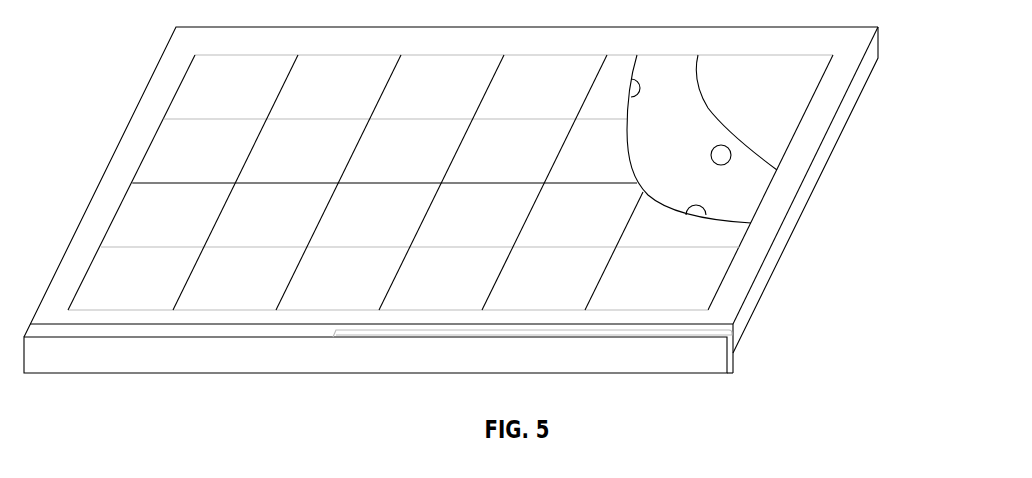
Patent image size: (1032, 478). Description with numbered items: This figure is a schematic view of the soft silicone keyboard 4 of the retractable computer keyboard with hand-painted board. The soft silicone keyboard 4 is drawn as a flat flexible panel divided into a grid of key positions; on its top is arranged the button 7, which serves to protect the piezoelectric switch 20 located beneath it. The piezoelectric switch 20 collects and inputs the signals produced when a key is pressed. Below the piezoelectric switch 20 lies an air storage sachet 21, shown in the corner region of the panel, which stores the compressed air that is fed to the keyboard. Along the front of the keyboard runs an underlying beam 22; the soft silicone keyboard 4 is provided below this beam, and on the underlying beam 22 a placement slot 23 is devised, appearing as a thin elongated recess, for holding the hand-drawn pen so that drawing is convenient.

The soft silicone keyboard 4 is at (847, 43).
The button 7 is at (655, 282).
The piezoelectric switch 20 is at (697, 212).
The air storage sachet 21 is at (768, 122).
The underlying beam 22 is at (673, 355).
The placement slot 23 is at (692, 332).